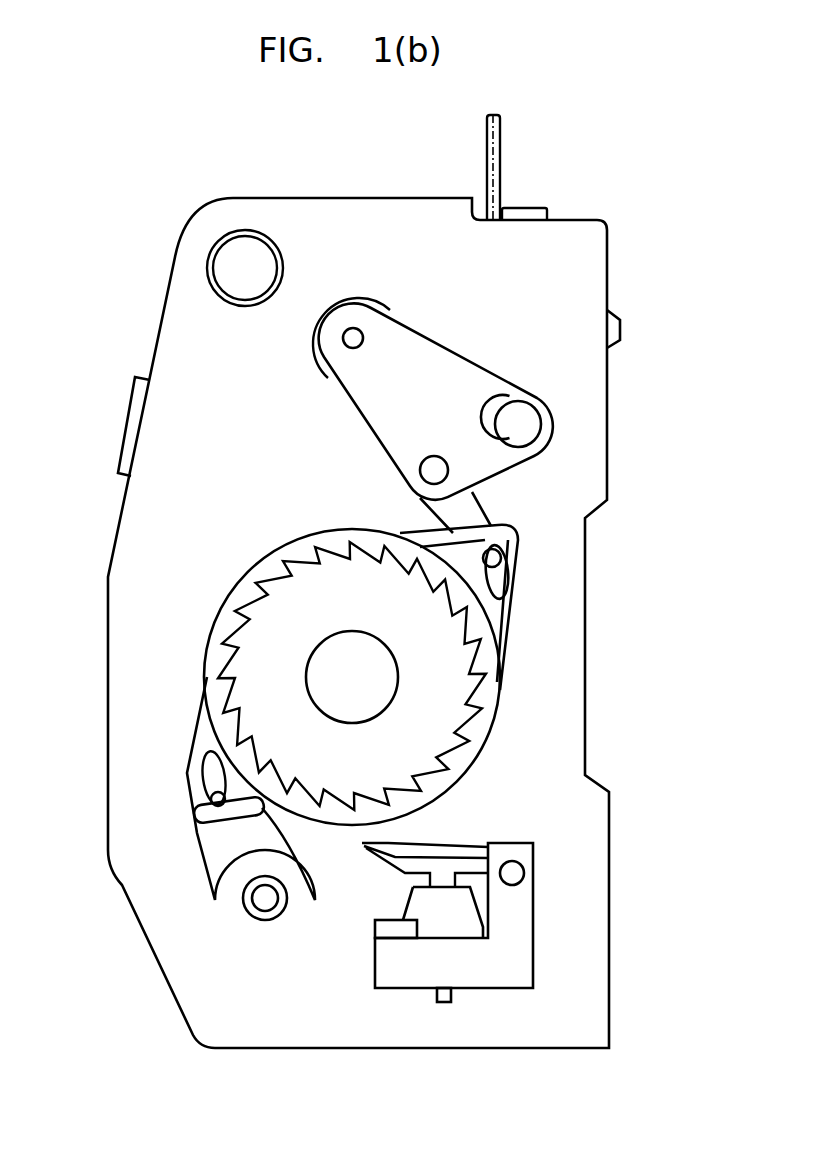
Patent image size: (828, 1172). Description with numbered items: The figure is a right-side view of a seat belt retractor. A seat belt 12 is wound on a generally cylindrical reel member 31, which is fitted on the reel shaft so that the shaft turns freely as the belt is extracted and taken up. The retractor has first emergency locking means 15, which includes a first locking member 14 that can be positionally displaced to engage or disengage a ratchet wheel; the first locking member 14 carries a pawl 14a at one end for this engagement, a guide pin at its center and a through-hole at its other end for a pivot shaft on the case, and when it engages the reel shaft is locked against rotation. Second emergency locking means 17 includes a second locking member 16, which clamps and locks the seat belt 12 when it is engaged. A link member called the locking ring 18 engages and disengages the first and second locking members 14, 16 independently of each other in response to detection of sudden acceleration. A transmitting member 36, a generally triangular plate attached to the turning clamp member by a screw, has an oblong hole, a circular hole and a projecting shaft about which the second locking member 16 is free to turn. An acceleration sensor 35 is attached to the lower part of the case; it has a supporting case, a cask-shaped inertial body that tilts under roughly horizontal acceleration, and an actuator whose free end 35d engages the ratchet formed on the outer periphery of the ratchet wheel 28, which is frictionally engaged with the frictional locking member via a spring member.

The seat belt 12 is at (488, 128).
The reel member 31 is at (243, 263).
The second emergency locking means 17 is at (290, 370).
The transmitting member 36 is at (472, 382).
The second locking member 16 is at (465, 512).
The first emergency locking means 15 is at (524, 661).
The locking ring 18 is at (470, 736).
The ratchet wheel 28 is at (440, 762).
The first locking member 14 is at (223, 872).
The pawl 14a is at (200, 805).
The acceleration sensor 35 is at (522, 925).
The free end 35d is at (372, 848).